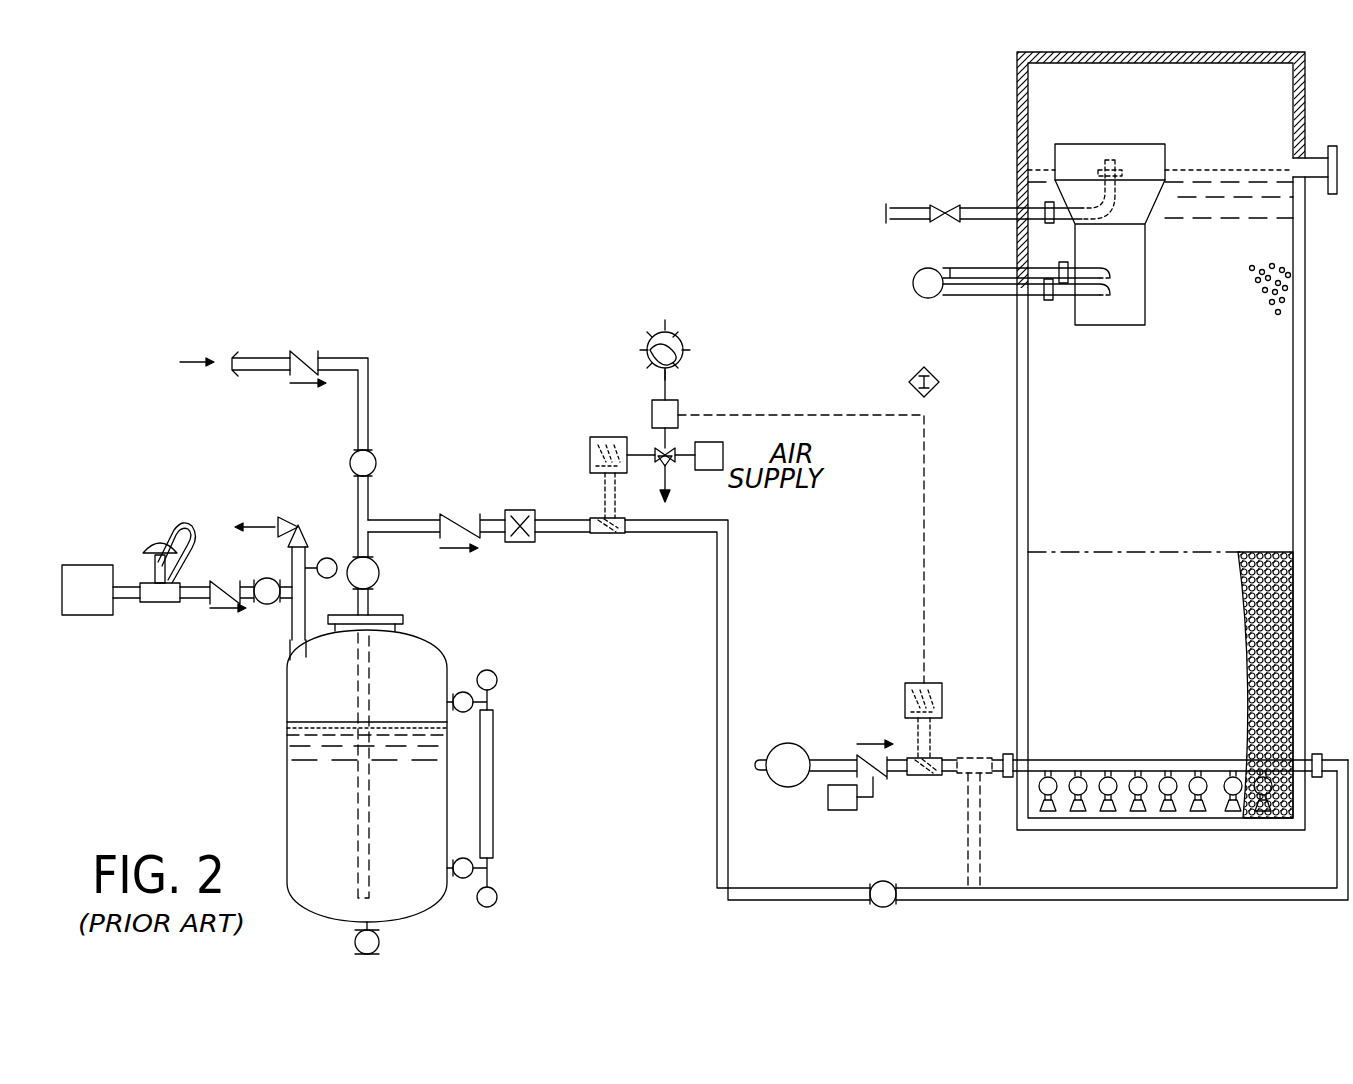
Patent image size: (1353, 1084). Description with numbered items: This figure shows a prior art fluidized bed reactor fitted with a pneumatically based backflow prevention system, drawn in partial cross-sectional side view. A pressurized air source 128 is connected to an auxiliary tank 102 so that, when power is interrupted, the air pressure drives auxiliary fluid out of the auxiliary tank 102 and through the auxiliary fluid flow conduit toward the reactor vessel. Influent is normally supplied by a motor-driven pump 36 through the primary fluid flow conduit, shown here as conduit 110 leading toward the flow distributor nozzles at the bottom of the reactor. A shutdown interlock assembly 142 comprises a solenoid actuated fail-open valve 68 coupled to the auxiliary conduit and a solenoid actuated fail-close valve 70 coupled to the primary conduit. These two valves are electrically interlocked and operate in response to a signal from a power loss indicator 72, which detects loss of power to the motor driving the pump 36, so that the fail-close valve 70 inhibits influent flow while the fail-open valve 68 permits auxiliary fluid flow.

The pressurized air source 128 is at (92, 571).
The auxiliary tank 102 is at (287, 722).
The solenoid actuated fail-open valve 68 is at (606, 535).
The conduit 110 is at (717, 645).
The shutdown interlock assembly 142 is at (810, 408).
The power loss indicator 72 is at (935, 371).
The pump 36 is at (784, 780).
The solenoid actuated fail-close valve 70 is at (922, 776).